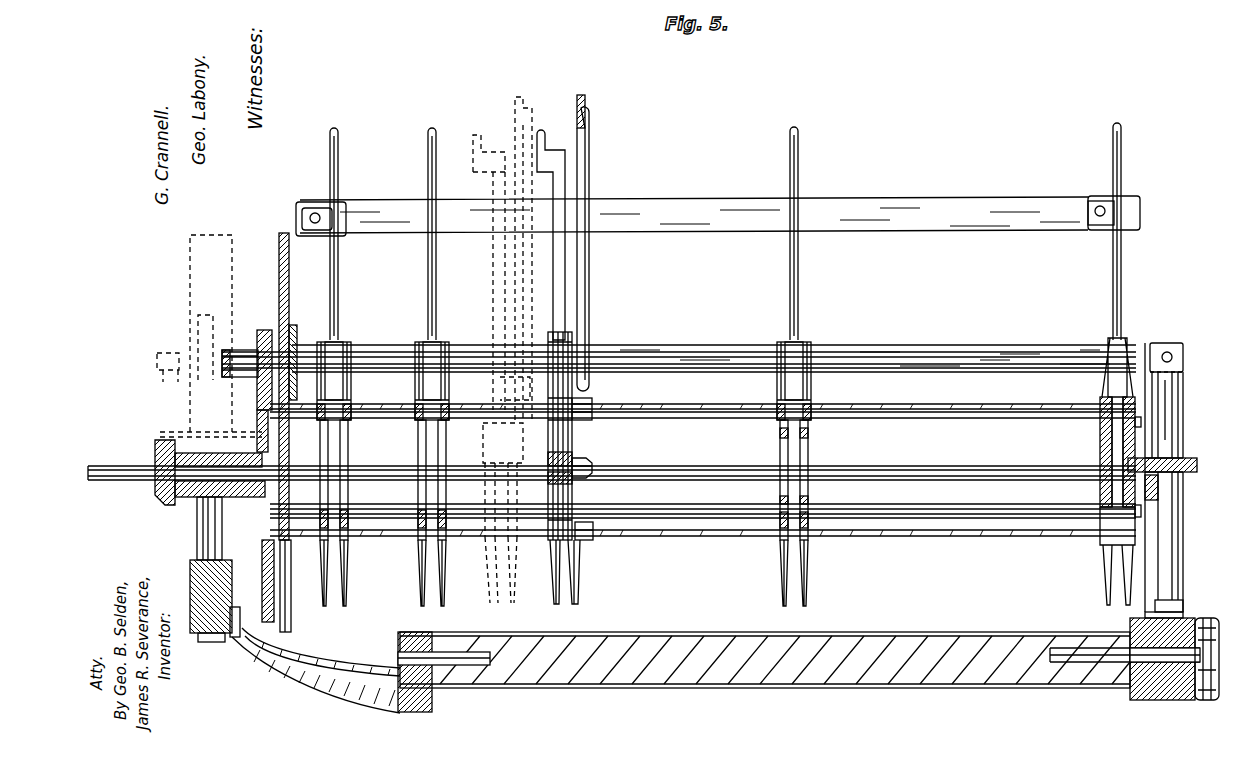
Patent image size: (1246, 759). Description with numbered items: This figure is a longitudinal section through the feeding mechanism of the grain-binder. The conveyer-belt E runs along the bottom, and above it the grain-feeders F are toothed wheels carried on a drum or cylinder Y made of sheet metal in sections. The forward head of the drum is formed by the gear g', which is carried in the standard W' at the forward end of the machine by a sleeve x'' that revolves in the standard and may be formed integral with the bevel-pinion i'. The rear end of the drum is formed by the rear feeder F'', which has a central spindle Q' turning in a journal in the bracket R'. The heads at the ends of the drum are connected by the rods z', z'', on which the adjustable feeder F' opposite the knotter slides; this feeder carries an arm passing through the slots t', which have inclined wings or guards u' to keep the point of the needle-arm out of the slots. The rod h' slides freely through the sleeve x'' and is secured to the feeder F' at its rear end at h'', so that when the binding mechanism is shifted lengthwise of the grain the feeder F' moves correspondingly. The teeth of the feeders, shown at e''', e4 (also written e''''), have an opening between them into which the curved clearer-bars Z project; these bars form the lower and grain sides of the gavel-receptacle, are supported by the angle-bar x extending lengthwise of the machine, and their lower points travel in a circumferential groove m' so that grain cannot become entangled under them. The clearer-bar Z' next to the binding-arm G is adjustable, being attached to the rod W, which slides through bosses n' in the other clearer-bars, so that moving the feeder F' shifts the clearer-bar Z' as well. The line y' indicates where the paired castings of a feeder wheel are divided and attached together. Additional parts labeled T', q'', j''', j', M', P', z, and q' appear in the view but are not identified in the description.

The top rail T' is at (694, 203).
The rail end bracket with pivot hole q'' is at (718, 205).
The clearer-bars Z is at (725, 231).
The adjustable clearer-bar Z' is at (516, 350).
The binding-arm G is at (589, 170).
The hooked arm j''' is at (551, 229).
The angle-bar x is at (714, 357).
The rod W is at (679, 344).
The shaft stub j' is at (207, 366).
The drum or cylinder Y is at (703, 471).
The rod h' is at (612, 463).
The grain-feeder F is at (572, 462).
The feeder tooth e''' is at (413, 387).
The feeder tooth e4 is at (444, 392).
The feeder tooth e'''' is at (526, 598).
The adjustable feeder F' is at (566, 458).
The inclined wings or guards u' is at (594, 470).
The attachment of rod to feeder h'' is at (593, 465).
The circumferential groove m' is at (534, 547).
The bosses n' is at (816, 335).
The slots t' is at (716, 471).
The connecting rod z' is at (875, 450).
The connecting rod z'' is at (710, 498).
The line of division y' is at (818, 482).
The bevel-pinion i' is at (446, 484).
The plate M' is at (267, 386).
The plate P' is at (301, 361).
The sleeve x'' is at (213, 445).
The standard W' is at (201, 579).
The gear g' is at (268, 586).
The conveyer-belt E is at (697, 632).
The shaft in base bar z is at (1032, 634).
The rear feeder F'' is at (1107, 471).
The central spindle Q' is at (1177, 464).
The bracket R' is at (1180, 480).
The nut q' is at (1184, 659).